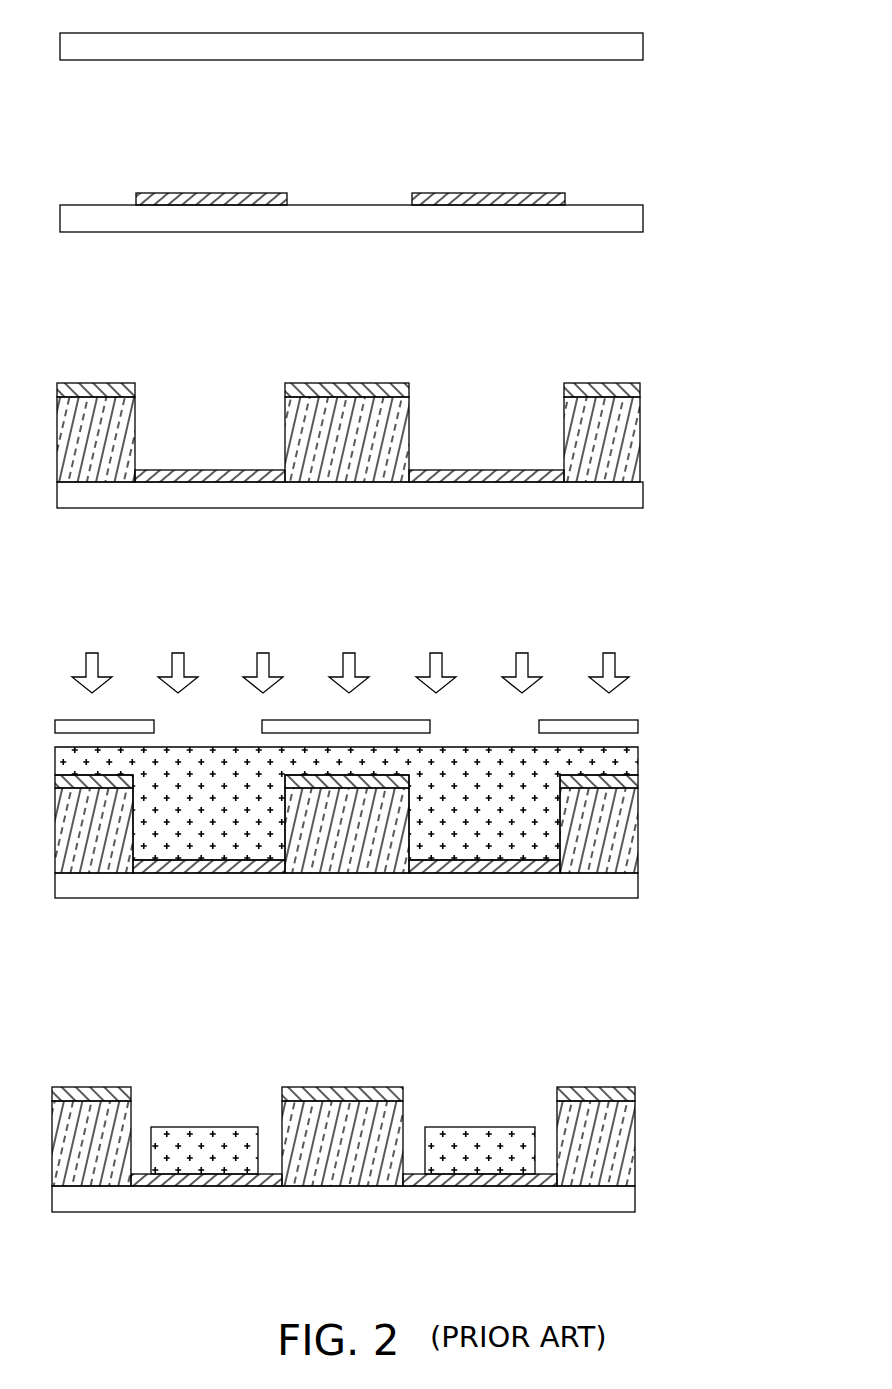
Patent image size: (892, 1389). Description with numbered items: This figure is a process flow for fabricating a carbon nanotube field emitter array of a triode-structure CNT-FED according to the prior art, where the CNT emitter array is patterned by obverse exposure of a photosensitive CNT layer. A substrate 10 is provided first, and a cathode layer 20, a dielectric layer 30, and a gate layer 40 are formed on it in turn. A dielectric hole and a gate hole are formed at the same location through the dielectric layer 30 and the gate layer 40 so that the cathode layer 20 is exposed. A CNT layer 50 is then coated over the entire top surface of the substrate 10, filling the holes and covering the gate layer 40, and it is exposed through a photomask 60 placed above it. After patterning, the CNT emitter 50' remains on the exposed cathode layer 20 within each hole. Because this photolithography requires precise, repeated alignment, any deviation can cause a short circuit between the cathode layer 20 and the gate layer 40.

The substrate 10 is at (638, 45).
The cathode layer 20 is at (565, 196).
The dielectric layer 30 is at (640, 428).
The gate layer 40 is at (607, 383).
The CNT layer 50 is at (383, 795).
The CNT emitter 50' is at (343, 1099).
The photomask 60 is at (636, 722).